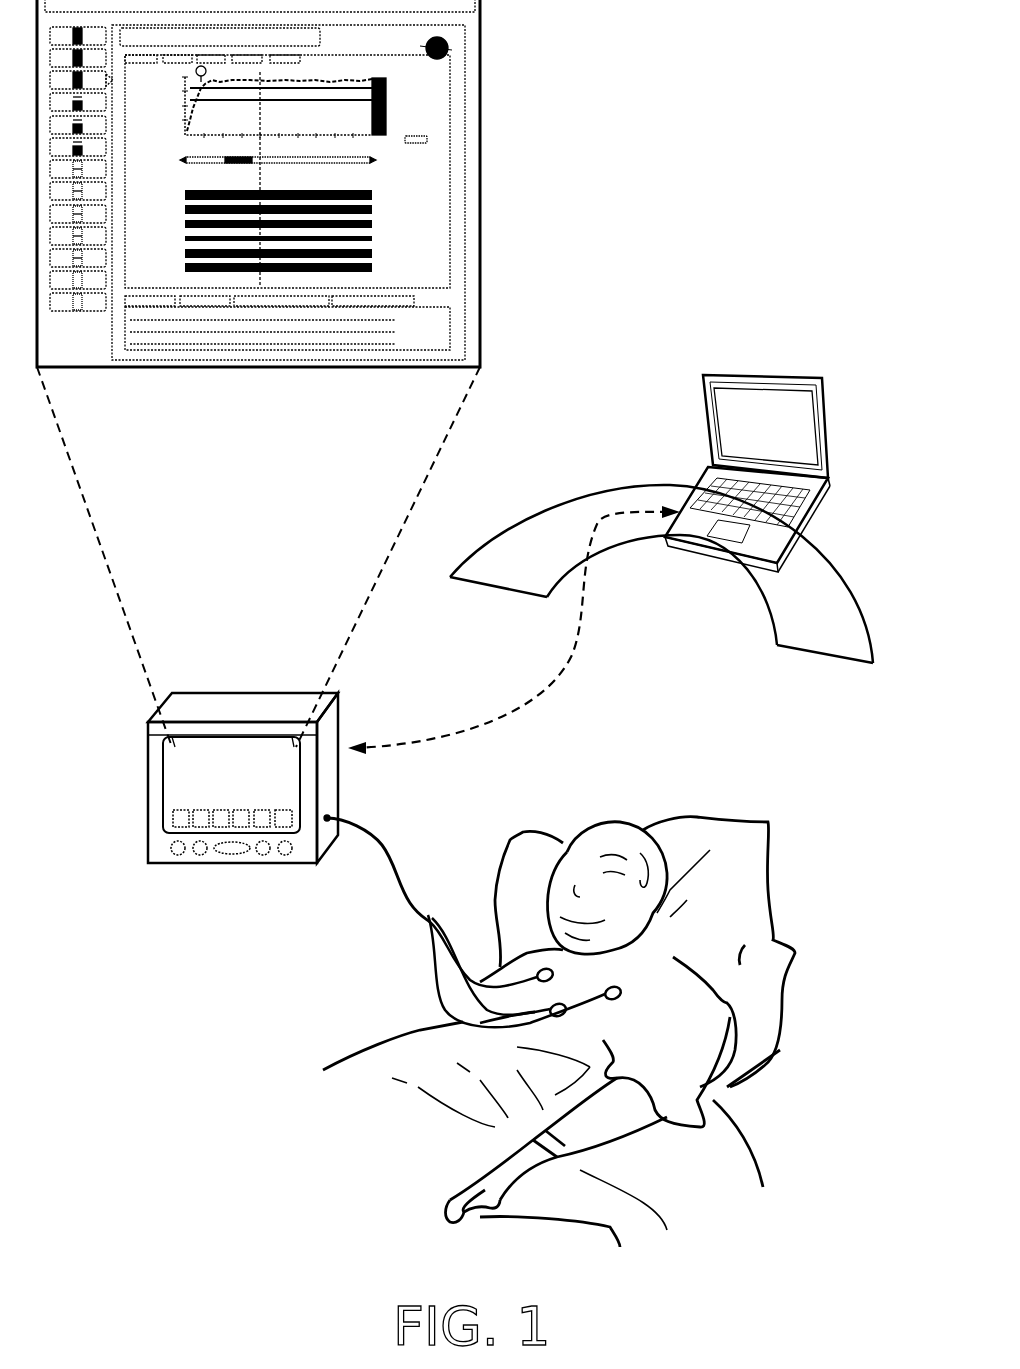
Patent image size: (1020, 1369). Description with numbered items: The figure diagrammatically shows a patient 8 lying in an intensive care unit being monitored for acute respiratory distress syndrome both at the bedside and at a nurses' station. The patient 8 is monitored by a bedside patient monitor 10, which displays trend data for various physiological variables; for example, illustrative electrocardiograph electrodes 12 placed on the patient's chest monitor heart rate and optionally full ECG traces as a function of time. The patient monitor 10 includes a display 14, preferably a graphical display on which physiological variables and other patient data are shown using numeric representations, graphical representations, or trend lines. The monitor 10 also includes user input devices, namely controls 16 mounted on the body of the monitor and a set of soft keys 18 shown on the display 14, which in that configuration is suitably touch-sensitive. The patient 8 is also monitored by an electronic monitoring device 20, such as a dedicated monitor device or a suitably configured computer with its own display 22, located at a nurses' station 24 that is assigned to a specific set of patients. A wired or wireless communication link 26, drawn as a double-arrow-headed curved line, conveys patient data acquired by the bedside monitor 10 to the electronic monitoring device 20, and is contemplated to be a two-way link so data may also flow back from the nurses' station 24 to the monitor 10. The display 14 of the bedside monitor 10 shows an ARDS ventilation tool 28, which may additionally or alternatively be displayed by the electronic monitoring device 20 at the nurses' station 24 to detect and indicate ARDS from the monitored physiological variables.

The patient 8 is at (607, 822).
The bedside patient monitor 10 is at (235, 765).
The electrocardiograph (ECG) electrodes 12 is at (560, 975).
The display 14 is at (176, 777).
The controls 16 is at (168, 848).
The soft keys 18 is at (170, 818).
The electronic monitoring device 20 is at (776, 434).
The display 22 is at (806, 427).
The nurses' station 24 is at (630, 414).
The communication link 26 is at (573, 649).
The ARDS ventilation tool 28 is at (480, 178).